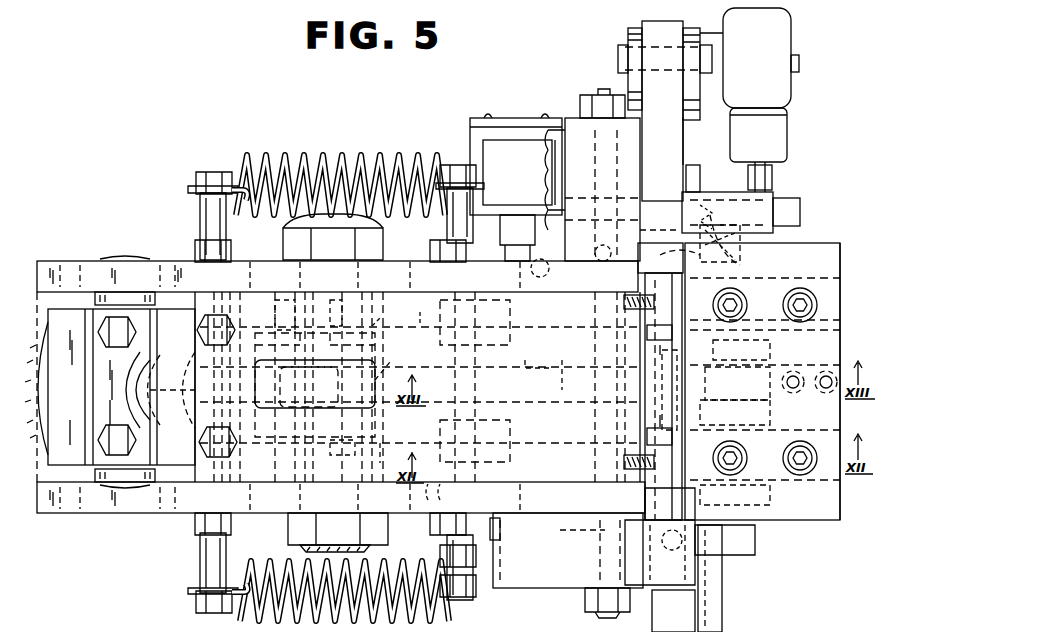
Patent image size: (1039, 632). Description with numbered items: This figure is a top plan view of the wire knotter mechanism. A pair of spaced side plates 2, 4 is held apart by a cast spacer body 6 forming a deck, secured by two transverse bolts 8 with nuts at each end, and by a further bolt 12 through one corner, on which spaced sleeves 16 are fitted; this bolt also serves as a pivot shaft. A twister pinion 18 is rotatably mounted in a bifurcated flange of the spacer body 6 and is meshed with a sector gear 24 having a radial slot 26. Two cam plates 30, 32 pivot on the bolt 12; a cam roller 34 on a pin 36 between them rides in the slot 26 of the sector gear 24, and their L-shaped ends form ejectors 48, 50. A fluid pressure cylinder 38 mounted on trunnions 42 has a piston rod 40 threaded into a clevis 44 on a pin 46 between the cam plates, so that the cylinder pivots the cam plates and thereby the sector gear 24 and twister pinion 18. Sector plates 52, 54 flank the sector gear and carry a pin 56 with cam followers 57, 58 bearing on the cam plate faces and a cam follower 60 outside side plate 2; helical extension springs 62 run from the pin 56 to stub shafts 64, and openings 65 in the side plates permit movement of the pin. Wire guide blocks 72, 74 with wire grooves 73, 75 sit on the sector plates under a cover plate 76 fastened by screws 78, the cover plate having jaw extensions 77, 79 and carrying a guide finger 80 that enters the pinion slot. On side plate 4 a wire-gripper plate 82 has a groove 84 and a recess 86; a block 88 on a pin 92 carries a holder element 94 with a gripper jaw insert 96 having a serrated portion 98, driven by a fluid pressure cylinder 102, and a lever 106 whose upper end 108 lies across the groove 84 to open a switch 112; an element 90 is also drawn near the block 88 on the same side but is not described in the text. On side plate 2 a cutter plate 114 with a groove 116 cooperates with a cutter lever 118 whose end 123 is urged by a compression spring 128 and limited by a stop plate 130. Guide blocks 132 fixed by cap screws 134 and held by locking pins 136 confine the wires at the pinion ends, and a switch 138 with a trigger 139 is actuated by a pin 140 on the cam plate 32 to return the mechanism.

The side plate 2 is at (278, 514).
The side plate 4 is at (252, 262).
The spacer body 6 is at (257, 482).
The bolt 8 is at (228, 308).
The bolt 12 is at (360, 550).
The sleeve 16 is at (380, 302).
The twister pinion 18 is at (665, 384).
The sector gear 24 is at (534, 355).
The radial slot 26 is at (567, 366).
The cam plate 30 is at (387, 460).
The cam plate 32 is at (419, 311).
The cam roller 34 is at (266, 390).
The pin 36 is at (306, 328).
The fluid pressure cylinder 38 is at (47, 430).
The piston rod 40 is at (181, 424).
The trunnion 42 is at (126, 258).
The clevis 44 is at (390, 361).
The pin 46 is at (384, 321).
The ejector 48 is at (328, 454).
The ejector 50 is at (335, 333).
The sector plate 52 is at (566, 478).
The sector plate 54 is at (566, 290).
The pin 56 is at (448, 168).
The cam follower 57 is at (483, 322).
The cam follower 58 is at (491, 451).
The cam follower 60 is at (480, 548).
The helical extension spring 62 is at (368, 150).
The stub shaft 64 is at (196, 216).
The opening 65 is at (512, 373).
The wire guide block 72 is at (828, 524).
The wire groove 73 is at (732, 419).
The wire guide block 74 is at (834, 284).
The wire groove 75 is at (741, 350).
The cover plate 76 is at (832, 354).
The jaw extension 77 is at (658, 529).
The screw 78 is at (782, 305).
The jaw extension 79 is at (654, 234).
The guide finger 80 is at (771, 383).
The wire-gripper plate 82 is at (748, 250).
The groove 84 is at (738, 247).
The recess 86 is at (643, 272).
The block 88 is at (628, 150).
The cap nut 90 is at (597, 94).
The pin 92 is at (606, 548).
The holder element 94 is at (651, 24).
The gripper jaw insert 96 is at (683, 179).
The serrated portion 98 is at (680, 239).
The fluid pressure cylinder 102 is at (703, 30).
The lever 106 is at (775, 182).
The upper end 108 is at (792, 212).
The switch 112 is at (785, 40).
The cutter plate 114 is at (755, 538).
The groove 116 is at (740, 496).
The lever 118 is at (551, 586).
The end 123 is at (705, 578).
The helical compression spring 128 is at (673, 611).
The stop plate 130 is at (502, 533).
The guide block 132 is at (648, 328).
The cap screw 134 is at (622, 309).
The locking pin 136 is at (641, 386).
The switch 138 is at (517, 118).
The trigger 139 is at (515, 270).
The pin 140 is at (267, 375).